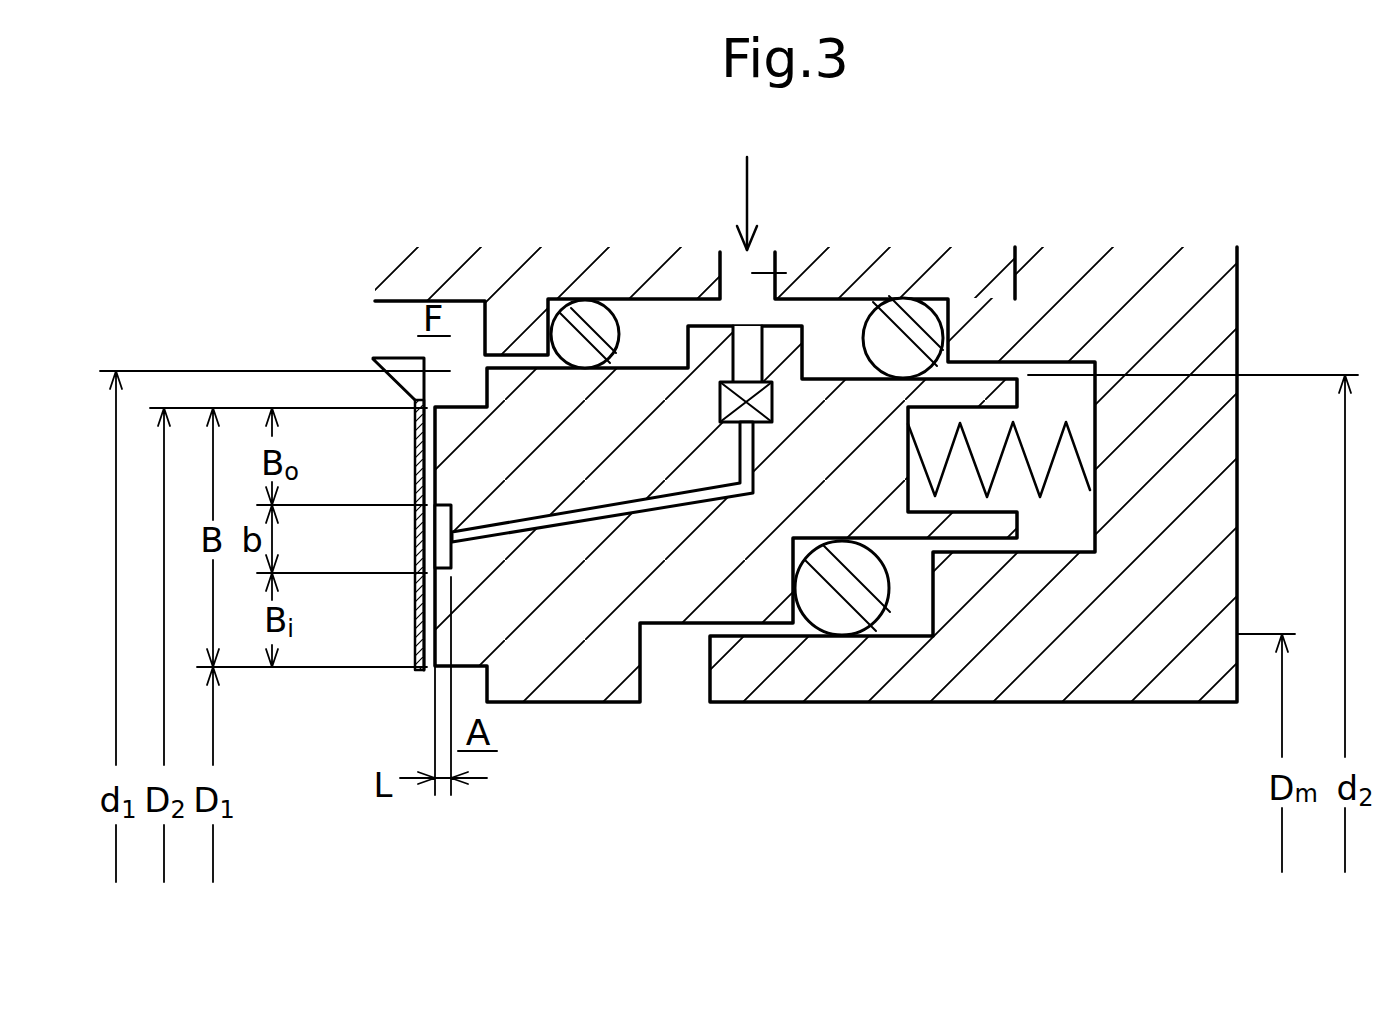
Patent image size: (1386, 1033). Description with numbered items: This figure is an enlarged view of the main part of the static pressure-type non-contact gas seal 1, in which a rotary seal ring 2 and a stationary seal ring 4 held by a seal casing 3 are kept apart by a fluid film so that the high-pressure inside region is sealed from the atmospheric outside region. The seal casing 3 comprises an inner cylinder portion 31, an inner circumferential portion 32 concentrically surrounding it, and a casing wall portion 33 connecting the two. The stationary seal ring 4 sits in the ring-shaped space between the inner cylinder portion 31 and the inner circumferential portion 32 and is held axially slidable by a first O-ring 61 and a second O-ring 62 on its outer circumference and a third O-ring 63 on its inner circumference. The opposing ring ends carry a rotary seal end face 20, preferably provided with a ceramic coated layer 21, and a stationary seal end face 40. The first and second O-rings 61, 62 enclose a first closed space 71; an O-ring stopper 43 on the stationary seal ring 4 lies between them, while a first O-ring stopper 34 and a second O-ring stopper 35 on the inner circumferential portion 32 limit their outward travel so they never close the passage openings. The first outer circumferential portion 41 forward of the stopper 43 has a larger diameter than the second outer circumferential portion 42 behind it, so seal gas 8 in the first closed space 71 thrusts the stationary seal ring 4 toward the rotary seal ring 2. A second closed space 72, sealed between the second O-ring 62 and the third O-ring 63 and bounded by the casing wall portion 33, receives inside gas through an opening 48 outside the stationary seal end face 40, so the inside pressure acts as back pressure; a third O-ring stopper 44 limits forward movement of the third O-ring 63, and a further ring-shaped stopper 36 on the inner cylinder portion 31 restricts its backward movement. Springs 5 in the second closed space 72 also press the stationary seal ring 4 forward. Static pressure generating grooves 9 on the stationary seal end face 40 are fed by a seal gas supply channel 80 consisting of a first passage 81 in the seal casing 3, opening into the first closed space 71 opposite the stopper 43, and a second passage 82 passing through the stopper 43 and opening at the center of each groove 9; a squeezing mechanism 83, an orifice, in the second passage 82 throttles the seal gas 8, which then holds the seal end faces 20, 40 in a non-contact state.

The static pressure-type non-contact gas seal 1 is at (1248, 328).
The rotary seal ring 2 is at (400, 353).
The seal casing 3 is at (1237, 290).
The stationary seal ring 4 is at (555, 704).
The springs 5 is at (1078, 438).
The seal gas 8 is at (747, 176).
The static pressure generating grooves 9 is at (434, 540).
The rotary seal end face 20 is at (437, 442).
The ceramic coated layer 21 is at (415, 480).
The inner cylinder portion 31 is at (783, 690).
The inner circumferential portion 32 is at (690, 300).
The casing wall portion 33 is at (1215, 496).
The first O-ring stopper 34 is at (572, 318).
The second O-ring stopper 35 is at (930, 292).
The housing step 36 is at (933, 590).
The stationary seal end face 40 is at (415, 630).
The first outer circumferential portion 41 is at (670, 368).
The second outer circumferential portion 42 is at (893, 295).
The O-ring stopper 43 is at (807, 363).
The third O-ring stopper 44 is at (813, 600).
The opening 48 is at (487, 398).
The first O-ring 61 is at (618, 305).
The second O-ring 62 is at (925, 350).
The third O-ring 63 is at (840, 610).
The first closed space 71 is at (810, 315).
The second closed space 72 is at (1058, 533).
The seal gas supply channel 80 is at (563, 528).
The first passage 81 is at (785, 273).
The second passage 82 is at (645, 510).
The squeezing mechanism 83 is at (776, 424).